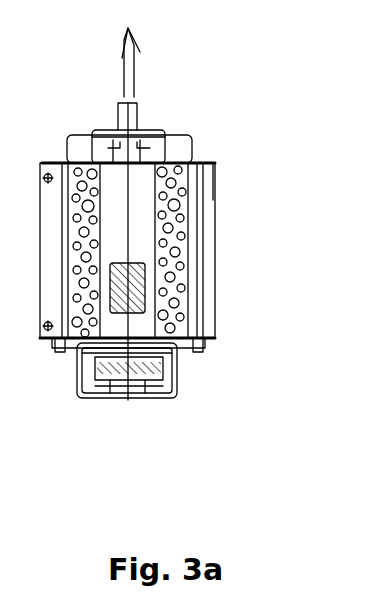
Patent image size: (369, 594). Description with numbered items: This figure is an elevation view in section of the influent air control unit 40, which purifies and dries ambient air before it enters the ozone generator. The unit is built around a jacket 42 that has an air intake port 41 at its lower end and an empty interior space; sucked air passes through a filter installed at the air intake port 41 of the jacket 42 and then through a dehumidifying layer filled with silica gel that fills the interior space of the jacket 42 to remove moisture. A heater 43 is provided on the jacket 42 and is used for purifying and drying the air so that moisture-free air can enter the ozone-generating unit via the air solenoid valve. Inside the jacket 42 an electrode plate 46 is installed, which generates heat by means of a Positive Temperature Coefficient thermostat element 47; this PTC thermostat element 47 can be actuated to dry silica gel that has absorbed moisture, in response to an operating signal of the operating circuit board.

The influent air control unit 40 is at (184, 252).
The air intake port 41 is at (105, 388).
The jacket 42 is at (200, 287).
The heater 43 is at (218, 213).
The electrode plate 46 is at (137, 245).
The PTC thermostat element 47 is at (195, 317).